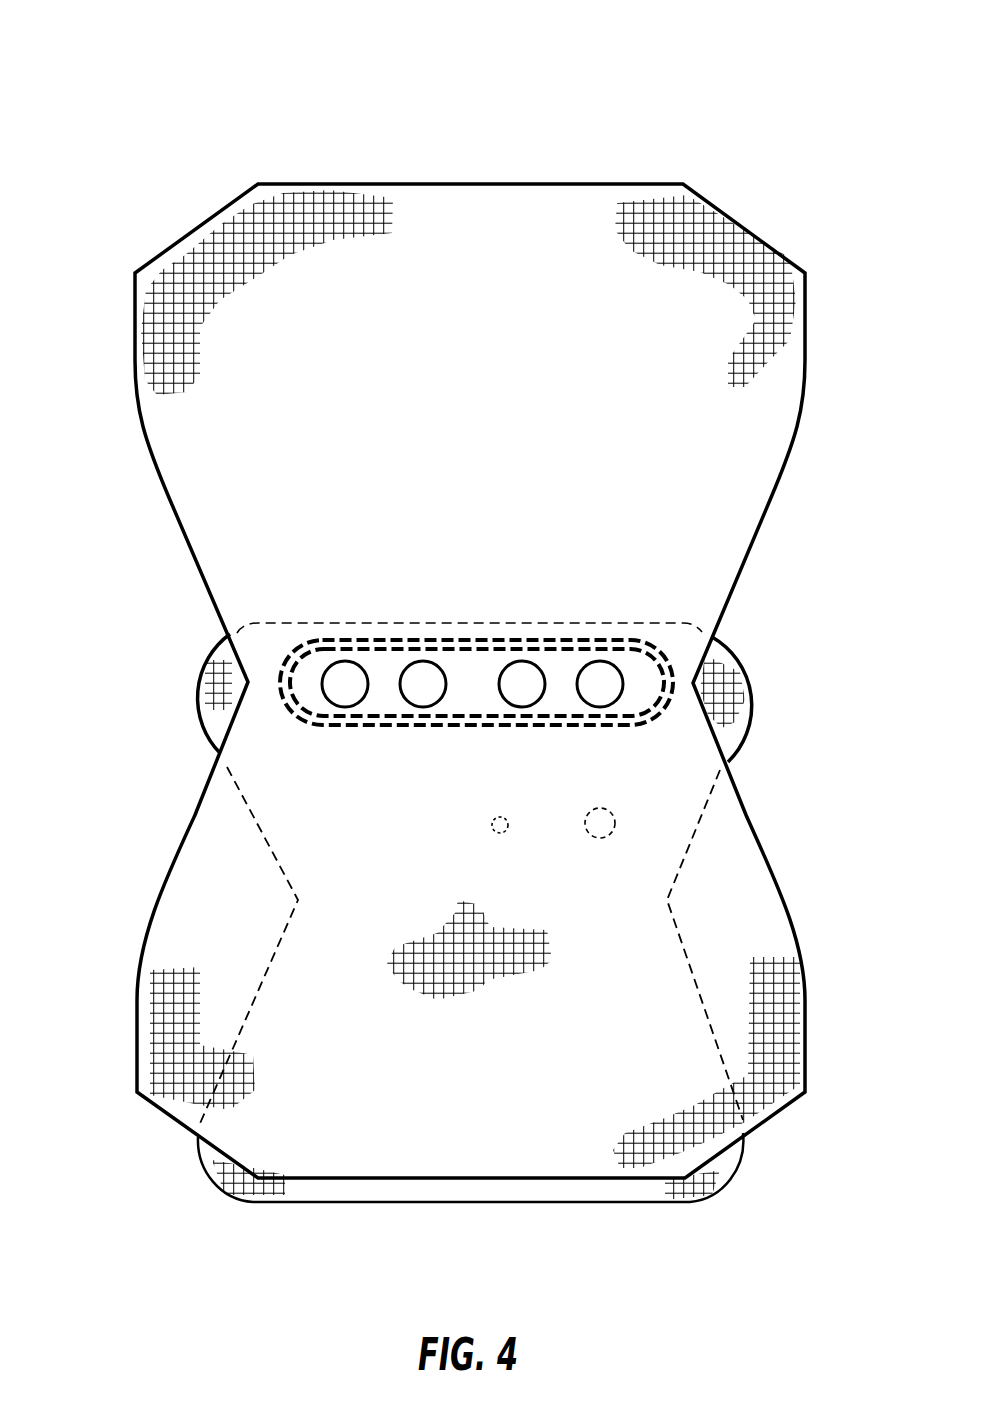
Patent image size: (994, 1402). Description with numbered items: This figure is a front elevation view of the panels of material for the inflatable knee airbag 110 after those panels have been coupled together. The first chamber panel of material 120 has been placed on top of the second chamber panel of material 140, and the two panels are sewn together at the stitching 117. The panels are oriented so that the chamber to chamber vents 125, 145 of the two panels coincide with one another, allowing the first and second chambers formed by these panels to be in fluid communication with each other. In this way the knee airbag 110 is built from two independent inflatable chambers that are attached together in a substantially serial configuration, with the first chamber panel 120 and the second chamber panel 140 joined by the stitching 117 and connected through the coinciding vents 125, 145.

The inflatable knee airbag 110 is at (531, 86).
The first chamber panel of material 120 is at (563, 223).
The stitching 117 is at (280, 663).
The chamber to chamber vent 125 is at (597, 677).
The chamber to chamber vent 145 is at (476, 629).
The second chamber panel of material 140 is at (655, 760).